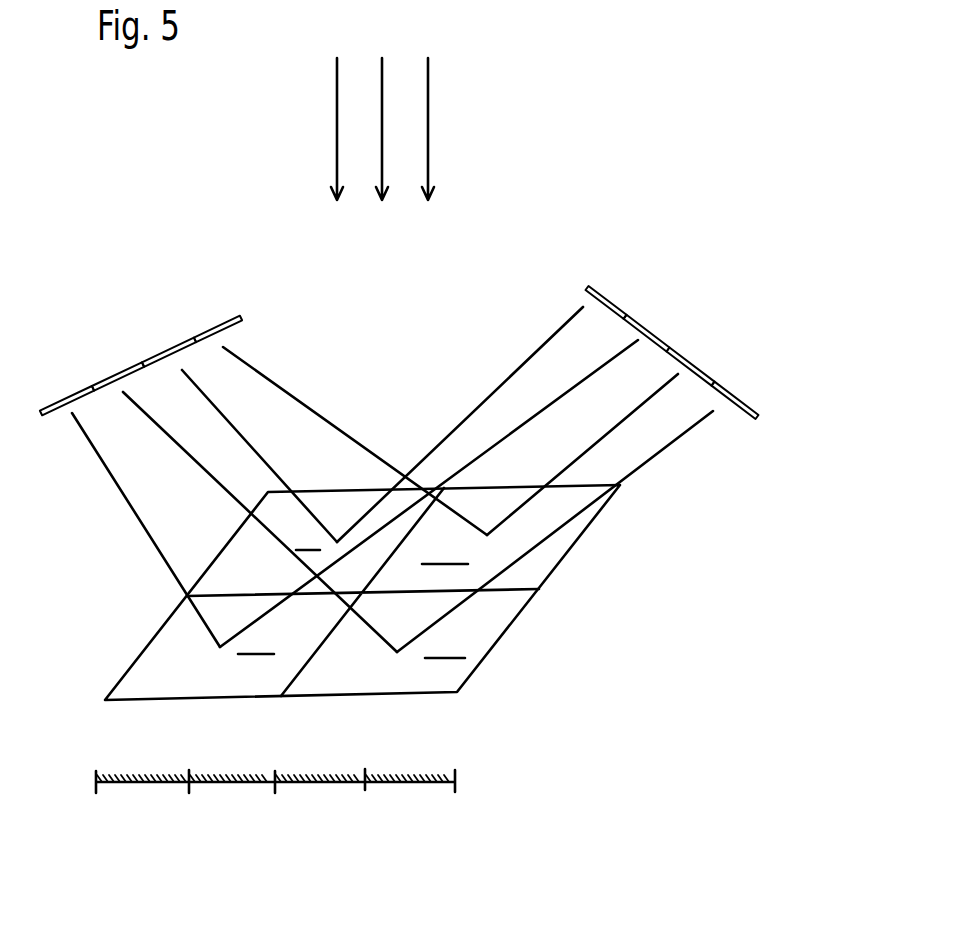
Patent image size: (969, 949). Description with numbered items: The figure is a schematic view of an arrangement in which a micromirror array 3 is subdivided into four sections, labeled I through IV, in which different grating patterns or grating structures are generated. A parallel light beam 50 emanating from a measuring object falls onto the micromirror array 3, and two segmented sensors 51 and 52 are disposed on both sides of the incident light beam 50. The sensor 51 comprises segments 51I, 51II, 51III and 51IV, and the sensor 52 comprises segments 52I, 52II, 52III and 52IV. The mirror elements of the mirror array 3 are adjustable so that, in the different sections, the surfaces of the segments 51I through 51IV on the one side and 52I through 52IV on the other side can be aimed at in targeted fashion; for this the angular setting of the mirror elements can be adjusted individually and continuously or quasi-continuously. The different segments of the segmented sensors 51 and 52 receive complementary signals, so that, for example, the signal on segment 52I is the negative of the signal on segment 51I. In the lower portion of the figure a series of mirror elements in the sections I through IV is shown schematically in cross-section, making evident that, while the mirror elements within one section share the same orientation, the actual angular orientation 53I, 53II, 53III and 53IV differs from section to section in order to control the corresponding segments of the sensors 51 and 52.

The parallel light beam 50 is at (428, 108).
The segmented sensor 51 is at (253, 427).
The sensor segment 51I is at (167, 350).
The sensor segment 51II is at (70, 396).
The sensor segment 51III is at (213, 329).
The sensor segment 51IV is at (117, 374).
The segmented sensor 52 is at (519, 425).
The sensor segment 52I is at (603, 298).
The sensor segment 52II is at (650, 334).
The sensor segment 52III is at (693, 365).
The sensor segment 52IV is at (737, 399).
The micromirror array 3 is at (505, 632).
The angular orientation 53I is at (130, 777).
The angular orientation 53II is at (220, 778).
The angular orientation 53III is at (330, 777).
The angular orientation 53IV is at (433, 772).